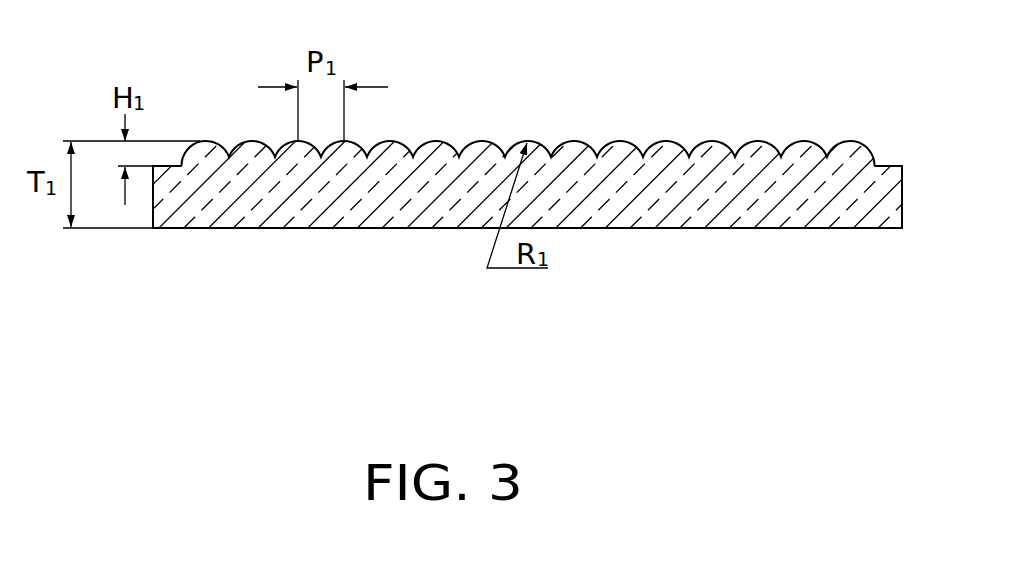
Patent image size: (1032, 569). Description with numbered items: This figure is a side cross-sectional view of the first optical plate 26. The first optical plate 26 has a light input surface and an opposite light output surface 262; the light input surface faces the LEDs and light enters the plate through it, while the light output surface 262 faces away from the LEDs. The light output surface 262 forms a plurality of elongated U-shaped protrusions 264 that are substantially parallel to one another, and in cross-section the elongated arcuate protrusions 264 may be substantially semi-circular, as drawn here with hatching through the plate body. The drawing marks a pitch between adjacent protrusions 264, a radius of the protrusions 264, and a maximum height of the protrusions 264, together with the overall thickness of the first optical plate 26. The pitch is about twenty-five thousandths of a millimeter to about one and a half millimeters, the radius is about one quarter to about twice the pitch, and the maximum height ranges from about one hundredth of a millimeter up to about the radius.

The first optical plate 26 is at (683, 93).
The light output surface 262 is at (889, 165).
The elongated U-shaped protrusions 264 is at (569, 145).